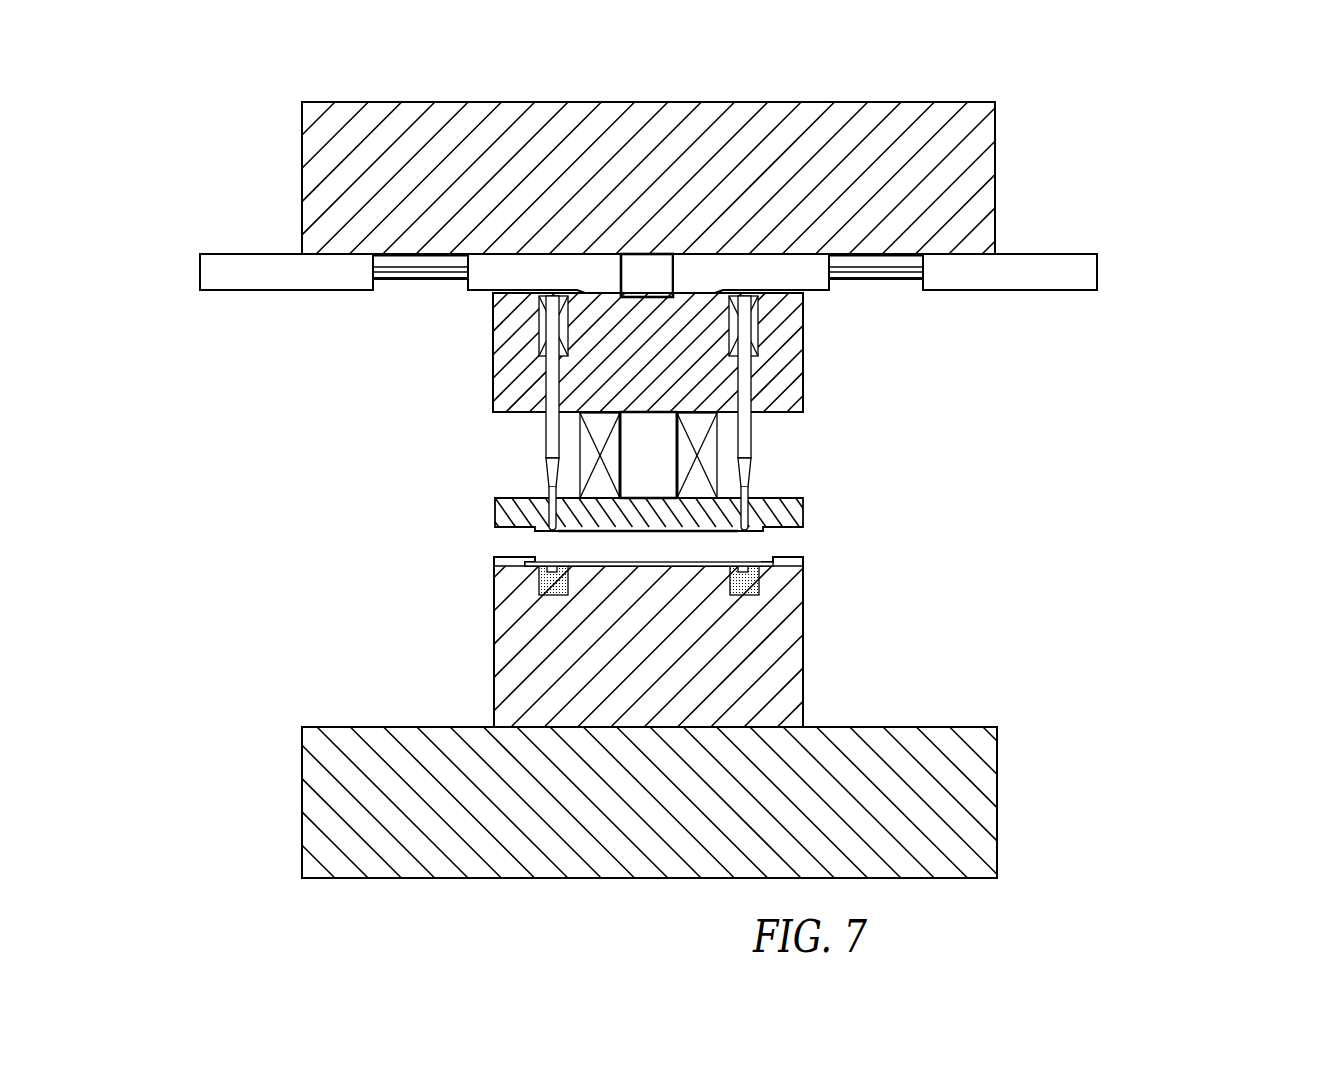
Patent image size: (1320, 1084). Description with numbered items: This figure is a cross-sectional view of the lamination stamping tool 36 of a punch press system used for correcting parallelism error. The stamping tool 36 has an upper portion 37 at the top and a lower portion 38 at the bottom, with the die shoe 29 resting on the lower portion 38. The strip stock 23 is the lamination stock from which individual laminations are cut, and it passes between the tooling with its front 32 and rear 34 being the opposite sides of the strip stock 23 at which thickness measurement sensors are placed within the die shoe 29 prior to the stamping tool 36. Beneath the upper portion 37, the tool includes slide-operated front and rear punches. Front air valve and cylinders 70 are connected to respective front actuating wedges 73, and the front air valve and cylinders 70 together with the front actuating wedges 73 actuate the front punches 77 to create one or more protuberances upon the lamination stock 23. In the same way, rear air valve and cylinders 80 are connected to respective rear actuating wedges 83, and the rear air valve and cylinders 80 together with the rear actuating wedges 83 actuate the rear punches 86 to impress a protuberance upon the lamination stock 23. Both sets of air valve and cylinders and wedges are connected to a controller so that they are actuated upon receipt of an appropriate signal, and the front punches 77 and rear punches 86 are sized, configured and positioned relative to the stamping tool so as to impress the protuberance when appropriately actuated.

The stamping tool 36 is at (740, 220).
The upper portion 37 is at (968, 194).
The front air valve and cylinders 70 is at (280, 277).
The front actuating wedges 73 is at (487, 280).
The rear actuating wedges 83 is at (808, 278).
The rear air valve and cylinders 80 is at (1017, 276).
The front of the strip stock 32 is at (586, 420).
The front punches 77 is at (545, 447).
The rear punches 86 is at (753, 443).
The strip stock 23 is at (743, 557).
The rear of the strip stock 34 is at (720, 628).
The die shoe 29 is at (805, 690).
The lower portion 38 is at (982, 797).